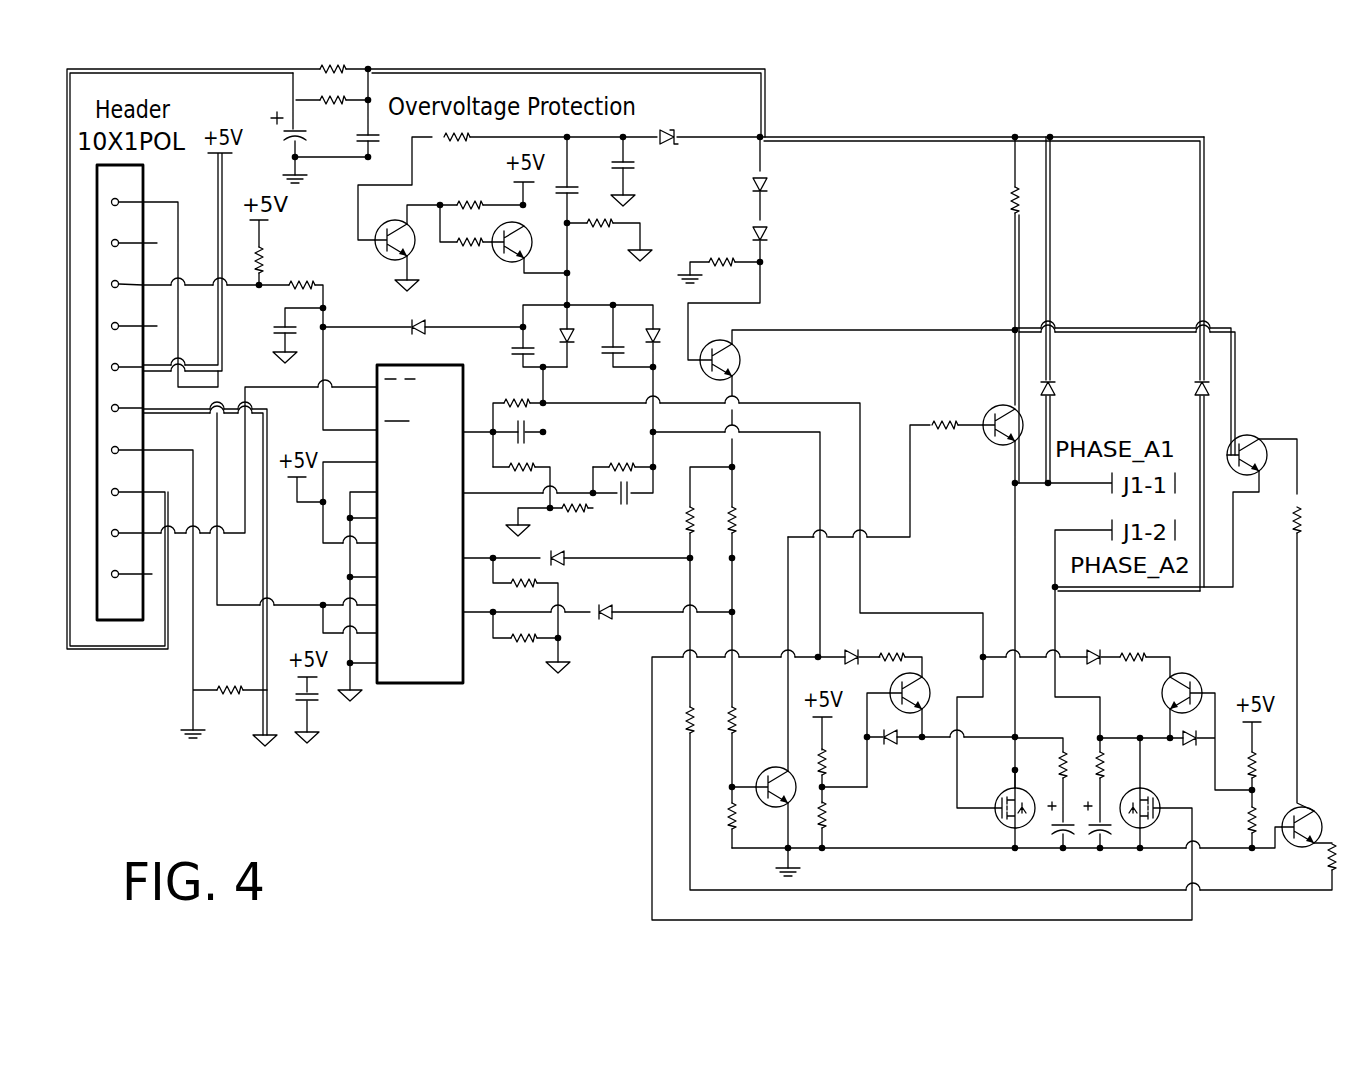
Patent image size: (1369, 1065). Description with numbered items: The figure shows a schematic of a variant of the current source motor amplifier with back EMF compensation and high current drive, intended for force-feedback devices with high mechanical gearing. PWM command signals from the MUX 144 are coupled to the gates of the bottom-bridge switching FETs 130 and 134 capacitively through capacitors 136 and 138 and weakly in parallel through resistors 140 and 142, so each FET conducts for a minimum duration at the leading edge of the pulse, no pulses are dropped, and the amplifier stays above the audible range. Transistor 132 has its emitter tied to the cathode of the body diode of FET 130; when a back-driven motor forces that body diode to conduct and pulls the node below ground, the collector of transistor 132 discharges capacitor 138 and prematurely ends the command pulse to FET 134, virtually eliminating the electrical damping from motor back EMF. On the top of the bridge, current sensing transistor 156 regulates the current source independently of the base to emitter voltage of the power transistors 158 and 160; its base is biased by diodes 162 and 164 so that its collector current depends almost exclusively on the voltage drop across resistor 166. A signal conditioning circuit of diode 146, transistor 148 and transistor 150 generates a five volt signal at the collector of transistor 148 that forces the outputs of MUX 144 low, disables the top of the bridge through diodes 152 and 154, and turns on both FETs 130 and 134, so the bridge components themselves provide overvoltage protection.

The switching transistor 130 is at (993, 805).
The transistor 132 is at (930, 683).
The switching FET 134 is at (1160, 805).
The capacitor 136 is at (528, 438).
The capacitor 138 is at (626, 496).
The resistor 140 is at (505, 401).
The resistor 142 is at (616, 464).
The MUX 144 is at (378, 370).
The diode 146 is at (680, 147).
The transistor 148 is at (496, 258).
The transistor 150 is at (380, 256).
The diode 152 is at (572, 350).
The diode 154 is at (660, 326).
The current sensing transistor 156 is at (742, 360).
The power transistor 158 is at (1278, 427).
The power transistor 160 is at (993, 412).
The diode 162 is at (768, 185).
The diode 164 is at (768, 234).
The resistor 166 is at (1008, 205).